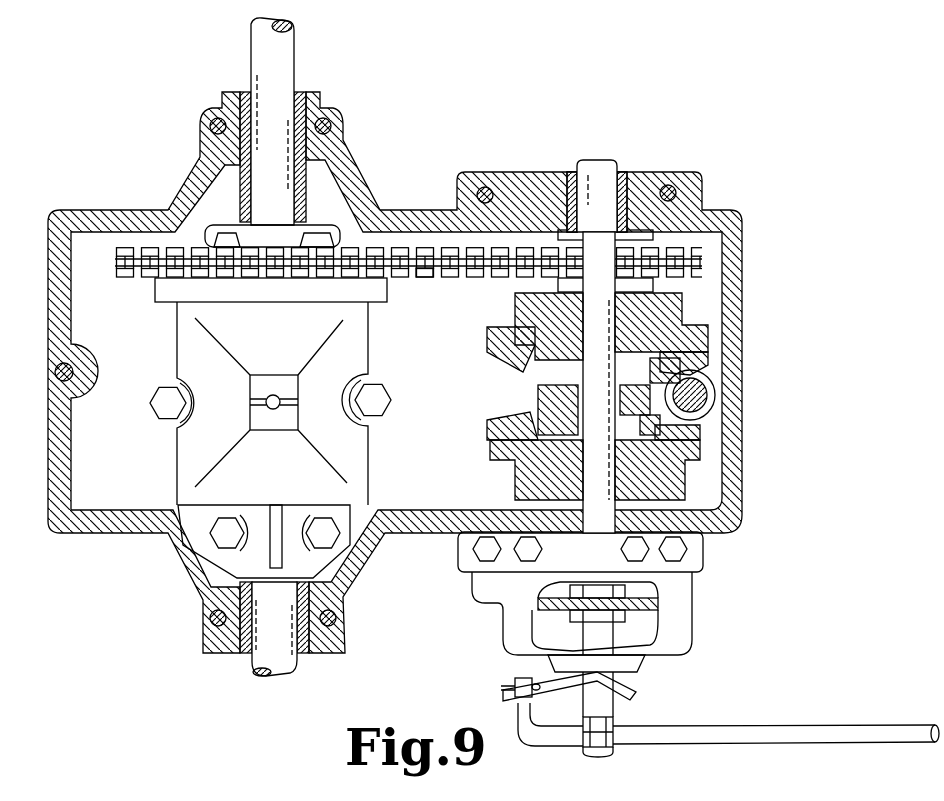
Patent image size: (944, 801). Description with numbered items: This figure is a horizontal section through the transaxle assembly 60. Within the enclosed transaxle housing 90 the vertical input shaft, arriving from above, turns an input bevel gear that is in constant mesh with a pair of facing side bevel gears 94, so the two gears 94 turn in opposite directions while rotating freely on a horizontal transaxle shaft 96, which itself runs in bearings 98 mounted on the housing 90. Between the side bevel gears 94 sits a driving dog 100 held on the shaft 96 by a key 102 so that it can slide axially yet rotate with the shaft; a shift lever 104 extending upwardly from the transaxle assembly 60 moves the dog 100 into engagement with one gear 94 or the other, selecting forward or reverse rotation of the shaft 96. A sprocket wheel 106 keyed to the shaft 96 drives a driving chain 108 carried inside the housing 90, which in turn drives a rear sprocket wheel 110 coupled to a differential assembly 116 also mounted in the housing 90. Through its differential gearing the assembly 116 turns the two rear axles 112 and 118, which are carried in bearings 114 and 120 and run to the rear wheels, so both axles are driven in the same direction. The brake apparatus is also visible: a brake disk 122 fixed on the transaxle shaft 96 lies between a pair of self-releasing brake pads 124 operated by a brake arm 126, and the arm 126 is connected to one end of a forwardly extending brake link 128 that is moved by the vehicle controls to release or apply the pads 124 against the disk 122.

The transaxle assembly 60 is at (410, 158).
The transaxle housing 90 is at (418, 218).
The side bevel gears 94 is at (672, 305).
The transaxle shaft 96 is at (592, 172).
The bearings 98 is at (618, 163).
The driving dog 100 is at (653, 380).
The key 102 is at (577, 413).
The shift lever 104 is at (698, 395).
The sprocket wheel 106 is at (522, 262).
The driving chain 108 is at (432, 278).
The rear sprocket wheel 110 is at (200, 272).
The rear axle 112 is at (283, 60).
The bearing 114 is at (283, 107).
The differential assembly 116 is at (170, 446).
The rear axle 118 is at (283, 662).
The bearing 120 is at (283, 632).
The brake disk 122 is at (655, 603).
The brake pads 124 is at (627, 588).
The brake arm 126 is at (635, 693).
The brake link 128 is at (790, 724).